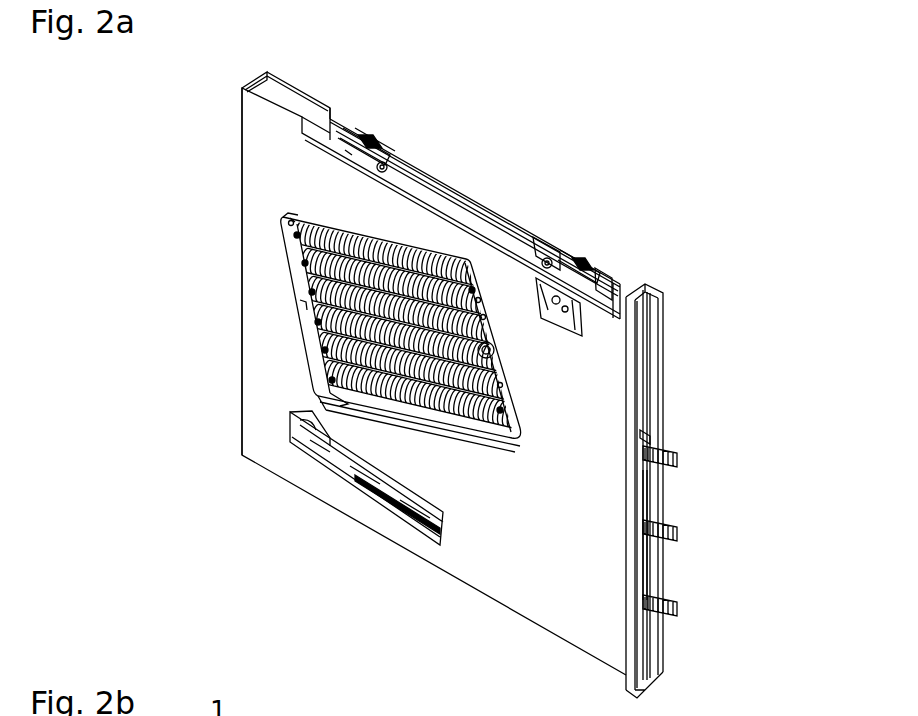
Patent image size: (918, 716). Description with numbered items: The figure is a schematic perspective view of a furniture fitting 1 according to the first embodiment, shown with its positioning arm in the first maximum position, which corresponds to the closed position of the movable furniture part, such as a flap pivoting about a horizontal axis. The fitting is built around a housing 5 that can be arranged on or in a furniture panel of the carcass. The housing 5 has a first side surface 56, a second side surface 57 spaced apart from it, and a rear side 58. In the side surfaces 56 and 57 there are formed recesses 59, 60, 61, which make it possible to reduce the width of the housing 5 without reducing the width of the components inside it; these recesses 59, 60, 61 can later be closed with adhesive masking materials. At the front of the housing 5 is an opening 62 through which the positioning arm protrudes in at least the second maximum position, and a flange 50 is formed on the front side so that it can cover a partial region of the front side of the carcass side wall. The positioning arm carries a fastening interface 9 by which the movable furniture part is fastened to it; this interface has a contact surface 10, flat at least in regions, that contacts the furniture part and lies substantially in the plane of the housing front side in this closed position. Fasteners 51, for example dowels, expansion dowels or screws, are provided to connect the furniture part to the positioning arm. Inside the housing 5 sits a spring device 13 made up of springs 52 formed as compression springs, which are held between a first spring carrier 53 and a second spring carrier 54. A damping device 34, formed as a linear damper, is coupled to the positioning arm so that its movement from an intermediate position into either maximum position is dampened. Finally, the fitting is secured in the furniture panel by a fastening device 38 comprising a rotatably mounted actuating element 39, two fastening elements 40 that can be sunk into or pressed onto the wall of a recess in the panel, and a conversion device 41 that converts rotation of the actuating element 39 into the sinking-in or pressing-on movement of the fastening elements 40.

The furniture fitting 1 is at (672, 108).
The housing 5 is at (268, 325).
The fastening interface 9 is at (678, 437).
The contact surface 10 is at (653, 493).
The spring device 13 is at (288, 258).
The damping device 34 is at (365, 490).
The fastening device 38 is at (497, 186).
The actuating element 39 is at (637, 287).
The fastening elements 40 is at (362, 135).
The conversion device 41 is at (548, 236).
The flange 50 is at (650, 676).
The fasteners 51 is at (677, 603).
The springs 52 is at (322, 222).
The first spring carrier 53 is at (317, 337).
The second spring carrier 54 is at (497, 372).
The first side surface 56 is at (257, 119).
The second side surface 57 is at (291, 99).
The rear side 58 is at (260, 84).
The recess 59 is at (330, 444).
The recess 60 is at (485, 445).
The recess 61 is at (537, 283).
The opening 62 is at (648, 364).